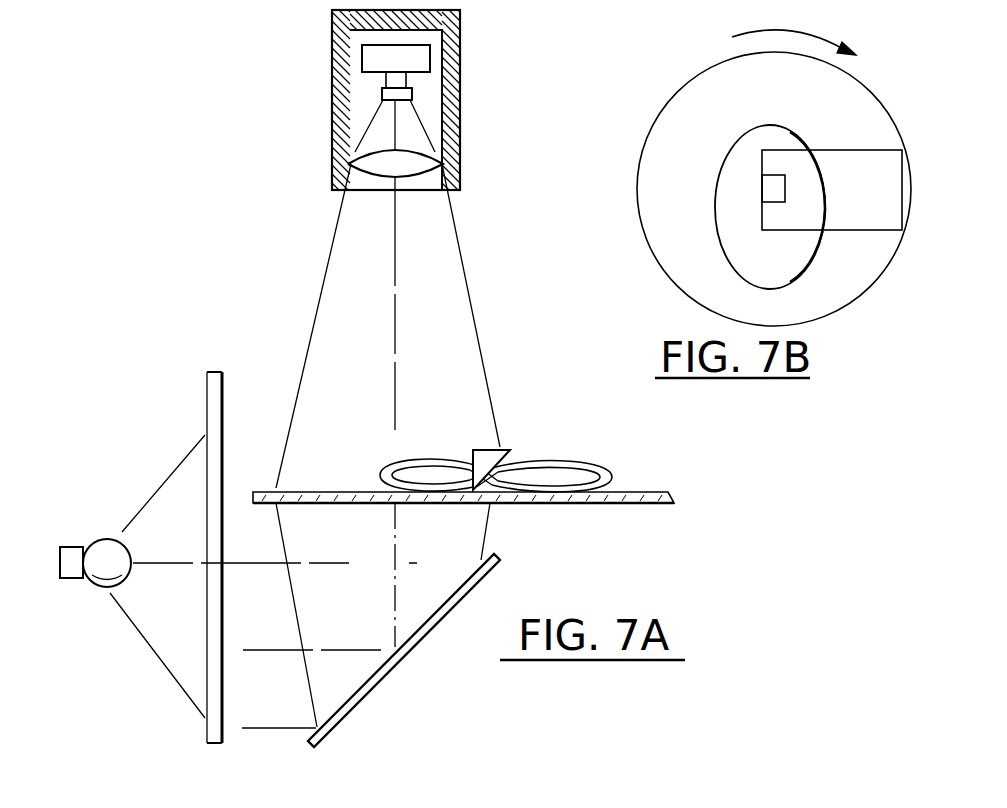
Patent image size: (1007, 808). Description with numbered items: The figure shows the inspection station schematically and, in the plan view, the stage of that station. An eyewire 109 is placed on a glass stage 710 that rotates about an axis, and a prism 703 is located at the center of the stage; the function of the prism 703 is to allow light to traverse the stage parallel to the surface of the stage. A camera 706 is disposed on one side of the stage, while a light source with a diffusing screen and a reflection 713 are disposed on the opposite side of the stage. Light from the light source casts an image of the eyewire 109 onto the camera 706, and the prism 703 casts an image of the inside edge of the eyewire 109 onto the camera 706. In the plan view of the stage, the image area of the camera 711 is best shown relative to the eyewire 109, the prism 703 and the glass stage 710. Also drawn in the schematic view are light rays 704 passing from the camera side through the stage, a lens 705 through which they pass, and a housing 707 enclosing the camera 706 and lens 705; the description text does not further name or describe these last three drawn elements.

In FIG. 7A, the eyewire 109 is at (568, 462).
In FIG. 7B, the eyewire 109 is at (778, 132).
In FIG. 7A, the prism 703 is at (510, 450).
In FIG. 7B, the prism 703 is at (766, 190).
In FIG. 7A, the light rays 704 is at (466, 296).
In FIG. 7A, the lens 705 is at (420, 150).
In FIG. 7A, the camera 706 is at (362, 58).
In FIG. 7A, the housing 707 is at (333, 130).
In FIG. 7A, the glass stage 710 is at (366, 504).
In FIG. 7B, the glass stage 710 is at (648, 213).
In FIG. 7B, the image area of the camera 711 is at (847, 236).
In FIG. 7A, the reflection 713 is at (382, 680).